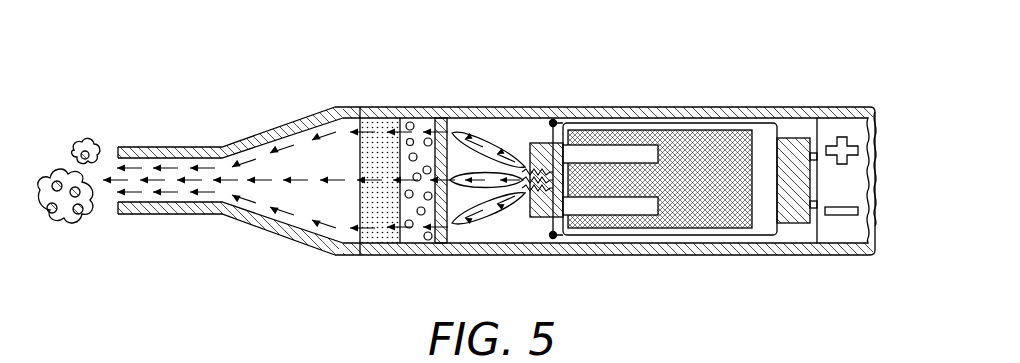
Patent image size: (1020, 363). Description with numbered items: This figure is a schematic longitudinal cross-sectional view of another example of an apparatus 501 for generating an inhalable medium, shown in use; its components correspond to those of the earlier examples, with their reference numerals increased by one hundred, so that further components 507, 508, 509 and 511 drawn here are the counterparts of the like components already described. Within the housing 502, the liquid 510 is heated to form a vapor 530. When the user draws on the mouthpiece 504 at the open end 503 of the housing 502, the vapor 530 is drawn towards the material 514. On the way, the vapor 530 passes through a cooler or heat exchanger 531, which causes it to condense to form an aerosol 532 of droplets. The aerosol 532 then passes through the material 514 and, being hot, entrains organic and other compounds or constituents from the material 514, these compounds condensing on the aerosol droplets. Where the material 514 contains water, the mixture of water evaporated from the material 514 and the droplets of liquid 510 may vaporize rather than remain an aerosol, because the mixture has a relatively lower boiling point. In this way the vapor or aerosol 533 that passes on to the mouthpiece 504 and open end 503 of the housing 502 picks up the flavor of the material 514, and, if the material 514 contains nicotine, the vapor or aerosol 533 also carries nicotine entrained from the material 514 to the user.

The apparatus for generating an inhalable medium 501 is at (576, 68).
The housing 502 is at (668, 255).
The open end 503 is at (102, 221).
The mouthpiece 504 is at (277, 125).
The battery 507 is at (868, 180).
The connector 508 is at (793, 218).
The cartridge 509 is at (723, 135).
The liquid 510 is at (678, 143).
The heater 511 is at (548, 222).
The material 514 is at (383, 118).
The vapor 530 is at (487, 145).
The cooler or heat exchanger 531 is at (445, 118).
The aerosol 532 is at (426, 234).
The vapor or aerosol 533 is at (284, 213).